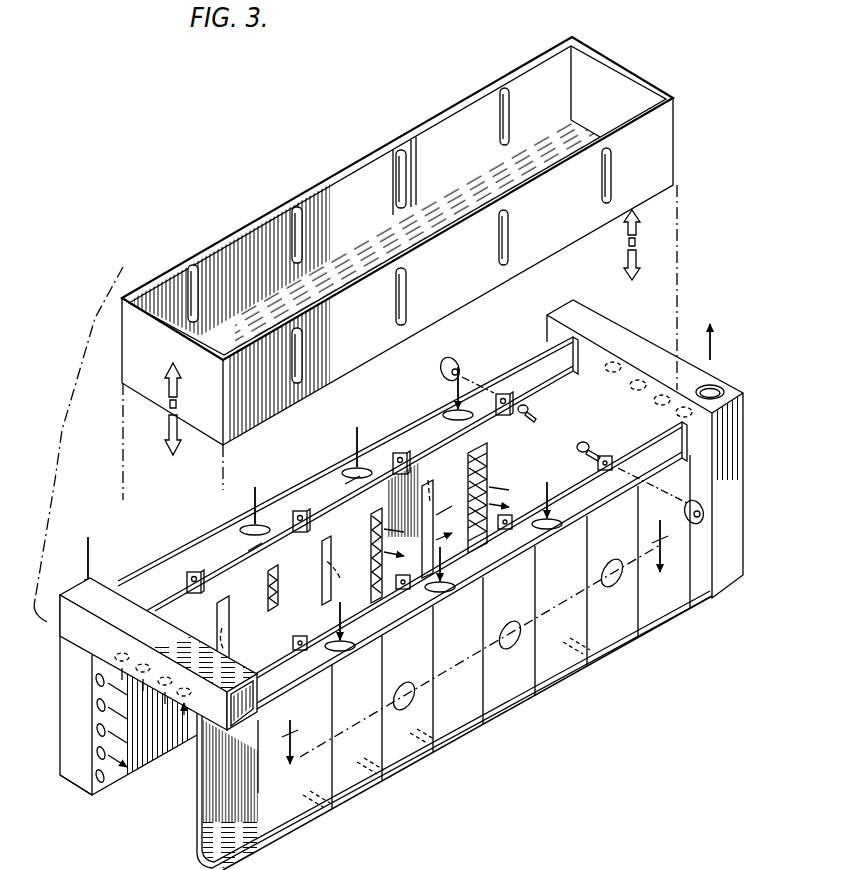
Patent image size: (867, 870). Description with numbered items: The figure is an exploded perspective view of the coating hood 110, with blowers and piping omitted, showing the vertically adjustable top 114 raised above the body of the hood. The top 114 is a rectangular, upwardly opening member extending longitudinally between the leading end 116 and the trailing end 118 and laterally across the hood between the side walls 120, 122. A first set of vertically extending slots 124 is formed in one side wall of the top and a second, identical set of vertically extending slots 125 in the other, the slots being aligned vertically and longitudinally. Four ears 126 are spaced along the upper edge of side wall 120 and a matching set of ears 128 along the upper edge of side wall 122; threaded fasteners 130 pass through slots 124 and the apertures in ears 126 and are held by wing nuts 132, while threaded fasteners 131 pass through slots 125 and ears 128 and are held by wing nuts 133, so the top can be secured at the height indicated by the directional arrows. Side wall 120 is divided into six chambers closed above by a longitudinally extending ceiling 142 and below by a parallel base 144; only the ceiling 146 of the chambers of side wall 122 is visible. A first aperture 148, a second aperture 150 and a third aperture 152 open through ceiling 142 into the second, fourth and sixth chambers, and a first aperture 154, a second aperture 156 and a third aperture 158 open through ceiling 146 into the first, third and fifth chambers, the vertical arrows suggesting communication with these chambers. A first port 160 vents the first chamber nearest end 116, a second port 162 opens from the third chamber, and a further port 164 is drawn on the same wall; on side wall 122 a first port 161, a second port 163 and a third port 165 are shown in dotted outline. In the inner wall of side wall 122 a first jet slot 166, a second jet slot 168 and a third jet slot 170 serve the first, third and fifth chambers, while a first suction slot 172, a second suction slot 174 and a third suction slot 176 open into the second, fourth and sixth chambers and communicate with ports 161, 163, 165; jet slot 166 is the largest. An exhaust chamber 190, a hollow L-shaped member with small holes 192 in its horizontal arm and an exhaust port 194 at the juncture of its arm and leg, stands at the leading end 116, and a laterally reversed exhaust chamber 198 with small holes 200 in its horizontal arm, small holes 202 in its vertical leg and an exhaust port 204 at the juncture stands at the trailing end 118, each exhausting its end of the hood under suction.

The coating hood 110 is at (118, 479).
The vertically adjustable top 114 is at (399, 268).
The leading end 116 is at (403, 575).
The trailing end 118 is at (100, 803).
The side wall 120 is at (454, 662).
The side wall 122 is at (348, 474).
The vertically extending slots 124 is at (303, 357).
The vertically extending slots 125 is at (509, 109).
The ears 126 is at (607, 457).
The ears 128 is at (192, 572).
The threaded fasteners 130 is at (580, 444).
The threaded fasteners 131 is at (533, 412).
The wing nuts 132 is at (695, 524).
The wing nuts 133 is at (452, 360).
The ceiling 142 is at (463, 569).
The base 144 is at (262, 848).
The ceiling 146 is at (158, 670).
The first aperture 148 is at (558, 520).
The second aperture 150 is at (450, 592).
The third aperture 152 is at (357, 656).
The first aperture 154 is at (471, 417).
The second aperture 156 is at (352, 484).
The third aperture 158 is at (254, 550).
The first port 160 is at (620, 590).
The first port 161 is at (434, 520).
The second port 162 is at (510, 650).
The second port 163 is at (329, 566).
The housing hole 164 is at (418, 705).
The third port 165 is at (224, 628).
The first jet slot 166 is at (488, 464).
The second jet slot 168 is at (376, 522).
The third jet slot 170 is at (275, 572).
The first suction slot 172 is at (429, 479).
The second suction slot 174 is at (322, 572).
The third suction slot 176 is at (217, 622).
The exhaust chamber 190 is at (665, 449).
The small holes 192 is at (612, 359).
The exhaust port 194 is at (728, 389).
The exhaust chamber 198 is at (110, 671).
The small holes 200 is at (182, 704).
The small holes 202 is at (107, 770).
The exhaust port 204 is at (97, 590).